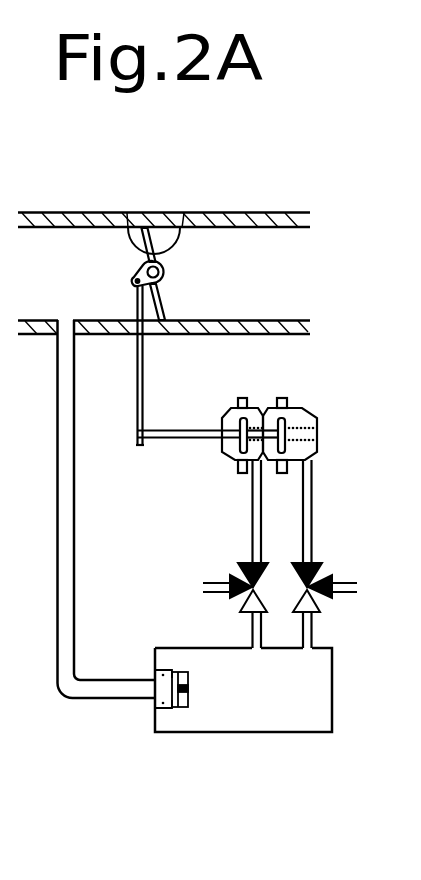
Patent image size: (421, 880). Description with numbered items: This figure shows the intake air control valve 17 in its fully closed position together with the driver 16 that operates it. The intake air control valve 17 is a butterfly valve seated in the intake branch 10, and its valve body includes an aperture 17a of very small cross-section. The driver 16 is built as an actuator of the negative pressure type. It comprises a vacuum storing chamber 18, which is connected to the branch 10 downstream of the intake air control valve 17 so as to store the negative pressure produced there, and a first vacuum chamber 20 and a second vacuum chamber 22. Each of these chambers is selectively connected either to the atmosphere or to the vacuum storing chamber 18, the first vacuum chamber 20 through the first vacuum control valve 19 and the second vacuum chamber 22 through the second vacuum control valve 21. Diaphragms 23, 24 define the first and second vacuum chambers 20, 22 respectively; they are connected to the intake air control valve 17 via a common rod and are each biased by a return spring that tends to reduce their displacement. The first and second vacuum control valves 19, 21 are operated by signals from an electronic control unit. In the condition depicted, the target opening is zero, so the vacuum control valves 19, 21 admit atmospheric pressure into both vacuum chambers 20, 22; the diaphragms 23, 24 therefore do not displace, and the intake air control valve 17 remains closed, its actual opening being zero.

The branch 10 is at (96, 212).
The aperture 17a is at (127, 213).
The intake air control valve 17 is at (184, 213).
The diaphragm 23 is at (233, 412).
The diaphragm 24 is at (298, 412).
The first vacuum chamber 20 is at (259, 455).
The second vacuum chamber 22 is at (313, 455).
The first vacuum control valve 19 is at (243, 602).
The second vacuum control valve 21 is at (318, 607).
The vacuum storing chamber 18 is at (290, 733).
The driver 16 is at (212, 746).